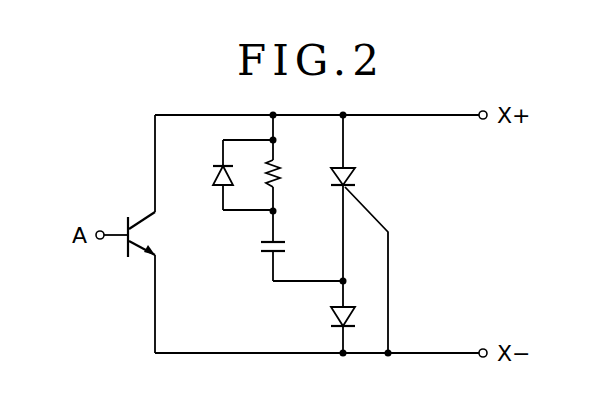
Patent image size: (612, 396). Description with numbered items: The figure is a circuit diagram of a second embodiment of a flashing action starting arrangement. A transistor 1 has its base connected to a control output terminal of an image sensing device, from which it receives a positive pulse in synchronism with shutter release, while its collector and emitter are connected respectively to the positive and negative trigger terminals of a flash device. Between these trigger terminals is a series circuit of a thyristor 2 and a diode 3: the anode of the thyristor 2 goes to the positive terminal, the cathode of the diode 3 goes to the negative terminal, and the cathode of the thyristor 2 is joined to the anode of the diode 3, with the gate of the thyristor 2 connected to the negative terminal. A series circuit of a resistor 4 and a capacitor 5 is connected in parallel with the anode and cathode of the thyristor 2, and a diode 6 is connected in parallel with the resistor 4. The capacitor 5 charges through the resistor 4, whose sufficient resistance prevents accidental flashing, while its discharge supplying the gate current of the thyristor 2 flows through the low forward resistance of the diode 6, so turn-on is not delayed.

The transistor 1 is at (157, 235).
The thyristor 2 is at (352, 181).
The diode 3 is at (331, 314).
The resistor 4 is at (282, 164).
The capacitor 5 is at (287, 248).
The diode 6 is at (212, 174).